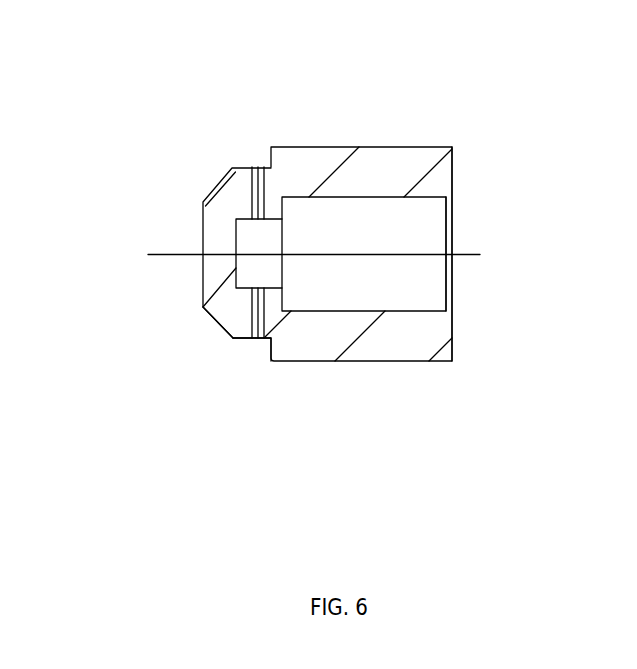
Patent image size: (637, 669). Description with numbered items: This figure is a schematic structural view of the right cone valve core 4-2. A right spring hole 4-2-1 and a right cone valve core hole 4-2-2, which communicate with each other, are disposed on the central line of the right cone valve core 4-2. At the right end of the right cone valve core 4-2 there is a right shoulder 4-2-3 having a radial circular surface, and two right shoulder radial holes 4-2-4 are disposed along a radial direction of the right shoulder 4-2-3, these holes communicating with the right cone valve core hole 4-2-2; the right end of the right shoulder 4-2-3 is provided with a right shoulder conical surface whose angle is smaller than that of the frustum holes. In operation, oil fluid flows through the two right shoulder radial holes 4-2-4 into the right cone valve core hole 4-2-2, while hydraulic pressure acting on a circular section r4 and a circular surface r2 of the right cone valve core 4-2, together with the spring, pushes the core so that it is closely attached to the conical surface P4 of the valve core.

The right cone valve core 4-2 is at (360, 333).
The right spring hole 4-2-1 is at (420, 272).
The right cone valve core hole 4-2-2 is at (258, 240).
The right shoulder 4-2-3 is at (233, 170).
The right shoulder radial holes 4-2-4 is at (250, 193).
The circular section r4 is at (448, 185).
The circular surface r2 is at (268, 351).
The conical surface P4 is at (218, 325).